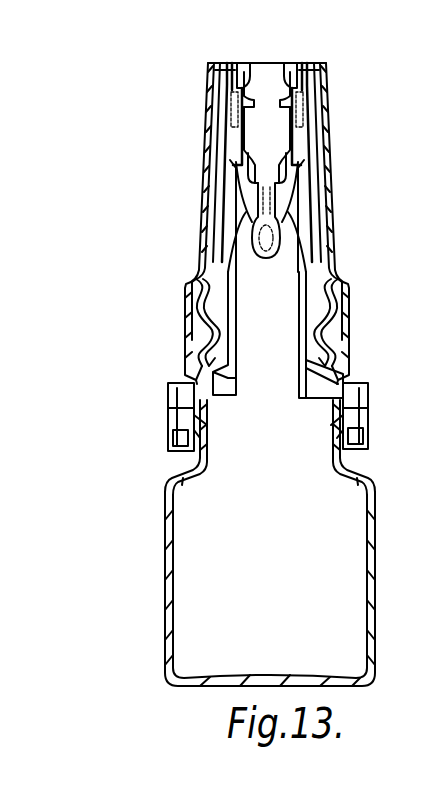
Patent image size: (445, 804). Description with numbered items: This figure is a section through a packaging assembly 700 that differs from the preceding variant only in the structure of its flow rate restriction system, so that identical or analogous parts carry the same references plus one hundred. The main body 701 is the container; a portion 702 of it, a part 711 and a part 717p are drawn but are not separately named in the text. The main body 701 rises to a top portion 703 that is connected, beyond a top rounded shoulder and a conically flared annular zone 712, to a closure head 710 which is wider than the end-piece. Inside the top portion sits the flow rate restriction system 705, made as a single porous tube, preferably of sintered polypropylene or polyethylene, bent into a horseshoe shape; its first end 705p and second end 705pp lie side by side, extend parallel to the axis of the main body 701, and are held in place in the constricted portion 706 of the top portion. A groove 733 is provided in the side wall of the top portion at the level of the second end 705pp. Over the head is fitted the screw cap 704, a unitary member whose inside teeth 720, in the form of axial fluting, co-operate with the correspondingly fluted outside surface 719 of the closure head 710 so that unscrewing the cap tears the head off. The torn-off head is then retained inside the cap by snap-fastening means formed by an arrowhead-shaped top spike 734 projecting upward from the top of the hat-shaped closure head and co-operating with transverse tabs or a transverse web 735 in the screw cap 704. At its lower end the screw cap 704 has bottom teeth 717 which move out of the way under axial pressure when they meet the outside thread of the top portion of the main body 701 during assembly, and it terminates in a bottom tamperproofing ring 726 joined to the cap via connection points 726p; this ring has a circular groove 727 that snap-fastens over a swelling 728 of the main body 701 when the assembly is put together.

The packaging assembly 700 is at (150, 253).
The main body 701 is at (160, 570).
The container wall 702 is at (165, 505).
The top portion of the main body 703 is at (235, 302).
The screw cap 704 is at (196, 170).
The flow rate restriction system 705 is at (292, 230).
The first end of the horseshoe tube 705p is at (300, 176).
The second end of the horseshoe tube 705pp is at (250, 212).
The constricted portion 706 is at (247, 227).
The closure head 710 is at (320, 78).
The spring 711 is at (318, 114).
The conically flared annular zone 712 is at (209, 155).
The bottom teeth 717 is at (185, 357).
The snap bead 717p is at (185, 312).
The outside surface with outside teeth 719 is at (211, 128).
The inside teeth 720 is at (215, 100).
The bottom tamperproofing ring 726 is at (168, 405).
The connection points 726p is at (352, 384).
The circular groove 727 is at (168, 443).
The swelling 728 is at (210, 452).
The groove 733 is at (292, 192).
The top spike 734 is at (268, 75).
The transverse web 735 is at (238, 92).